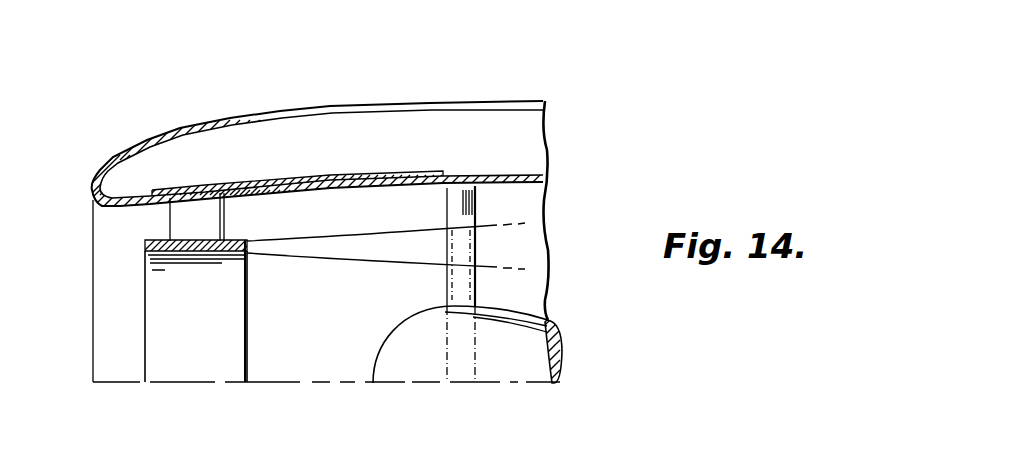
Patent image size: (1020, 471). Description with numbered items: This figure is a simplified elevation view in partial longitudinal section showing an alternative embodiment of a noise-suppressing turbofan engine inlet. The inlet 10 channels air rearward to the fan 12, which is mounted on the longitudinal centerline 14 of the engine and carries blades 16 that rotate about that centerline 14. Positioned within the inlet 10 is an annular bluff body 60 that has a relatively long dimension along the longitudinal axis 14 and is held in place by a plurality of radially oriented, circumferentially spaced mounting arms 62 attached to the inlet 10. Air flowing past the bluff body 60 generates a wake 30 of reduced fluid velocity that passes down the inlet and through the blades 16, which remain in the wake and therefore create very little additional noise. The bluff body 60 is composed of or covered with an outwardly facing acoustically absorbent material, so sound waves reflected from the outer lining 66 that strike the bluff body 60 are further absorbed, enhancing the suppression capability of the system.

The inlet 10 is at (306, 110).
The fan 12 is at (401, 322).
The longitudinal centerline 14 is at (309, 381).
The blades 16 is at (475, 208).
The wake 30 is at (402, 255).
The annular bluff body 60 is at (212, 307).
The mounting arms 62 is at (198, 223).
The outer lining 66 is at (408, 176).